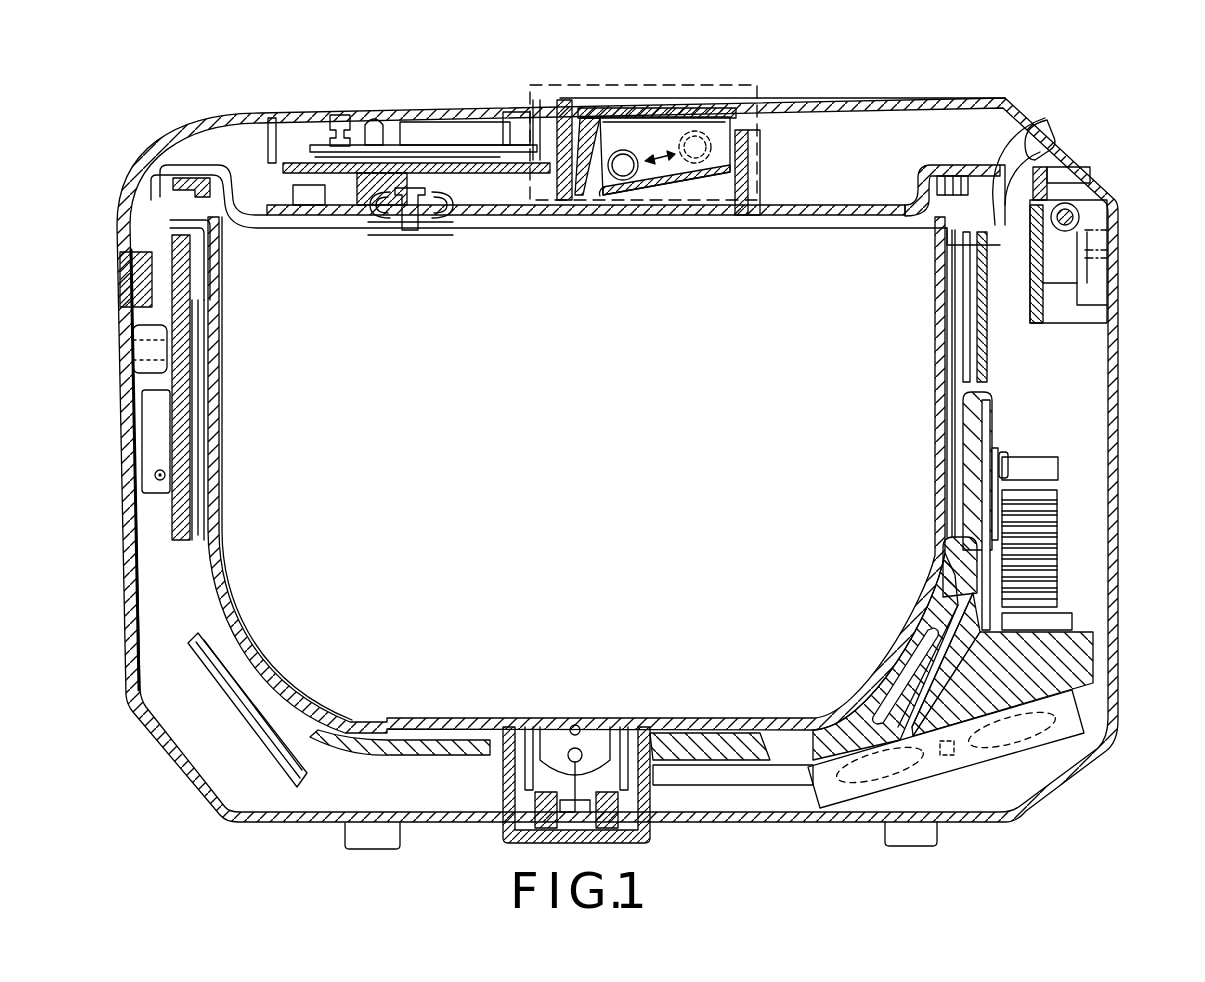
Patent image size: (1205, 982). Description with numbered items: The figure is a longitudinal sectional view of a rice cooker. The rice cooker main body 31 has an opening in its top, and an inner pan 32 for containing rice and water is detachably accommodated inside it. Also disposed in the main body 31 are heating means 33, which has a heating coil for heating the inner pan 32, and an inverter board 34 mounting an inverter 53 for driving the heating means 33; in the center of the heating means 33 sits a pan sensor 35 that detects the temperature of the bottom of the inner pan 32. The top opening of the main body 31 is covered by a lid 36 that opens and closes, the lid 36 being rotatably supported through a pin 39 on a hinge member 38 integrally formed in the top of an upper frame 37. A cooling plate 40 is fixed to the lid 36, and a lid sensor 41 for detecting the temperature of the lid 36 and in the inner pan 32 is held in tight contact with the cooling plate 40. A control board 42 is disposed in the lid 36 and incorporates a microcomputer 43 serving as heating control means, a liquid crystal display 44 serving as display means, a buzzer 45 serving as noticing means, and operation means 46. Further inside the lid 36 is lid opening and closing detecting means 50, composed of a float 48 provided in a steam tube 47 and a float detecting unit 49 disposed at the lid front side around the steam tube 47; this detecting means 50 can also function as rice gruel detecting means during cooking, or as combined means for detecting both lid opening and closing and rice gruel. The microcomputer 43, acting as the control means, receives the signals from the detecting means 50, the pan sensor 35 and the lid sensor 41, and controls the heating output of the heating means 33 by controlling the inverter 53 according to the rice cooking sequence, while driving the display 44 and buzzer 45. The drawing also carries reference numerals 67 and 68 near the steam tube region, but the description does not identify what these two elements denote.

The rice cooker main body 31 is at (124, 507).
The inner pan 32 is at (213, 337).
The heating means 33 is at (400, 760).
The inverter board 34 is at (1015, 458).
The pan sensor 35 is at (578, 725).
The lid 36 is at (905, 100).
The upper frame 37 is at (983, 293).
The hinge member 38 is at (1018, 158).
The pin 39 is at (1075, 215).
The cooling plate 40 is at (832, 230).
The lid sensor 41 is at (418, 228).
The control board 42 is at (430, 145).
The microcomputer 43 is at (392, 215).
The liquid crystal display 44 is at (485, 120).
The buzzer 45 is at (450, 140).
The operation means 46 is at (335, 115).
The steam tube 47 is at (700, 185).
The float 48 is at (623, 168).
The float detecting unit 49 is at (550, 160).
The lid opening and closing detecting means 50 is at (710, 88).
The inverter 53 is at (1000, 520).
The bottom wall 67 is at (672, 195).
The corner 68 is at (597, 195).